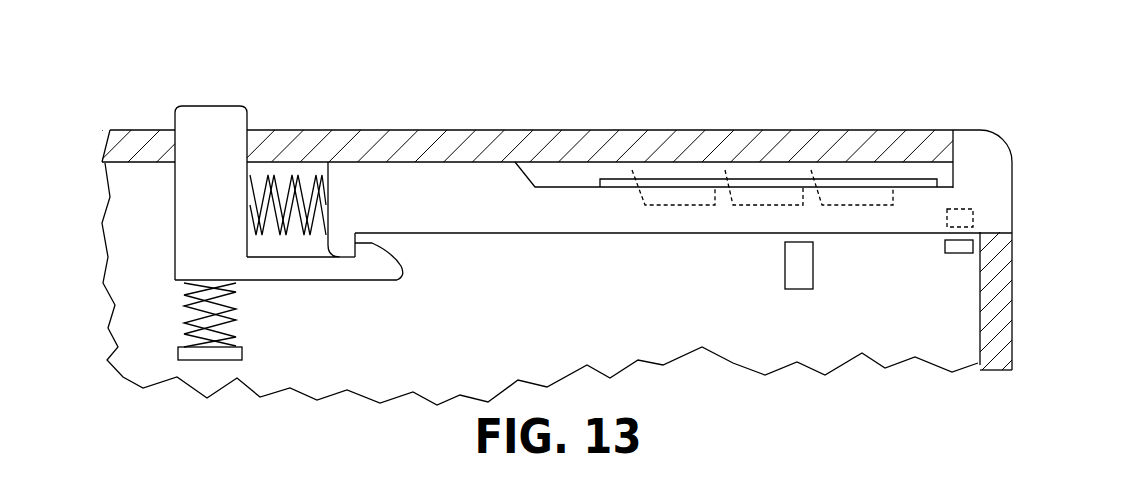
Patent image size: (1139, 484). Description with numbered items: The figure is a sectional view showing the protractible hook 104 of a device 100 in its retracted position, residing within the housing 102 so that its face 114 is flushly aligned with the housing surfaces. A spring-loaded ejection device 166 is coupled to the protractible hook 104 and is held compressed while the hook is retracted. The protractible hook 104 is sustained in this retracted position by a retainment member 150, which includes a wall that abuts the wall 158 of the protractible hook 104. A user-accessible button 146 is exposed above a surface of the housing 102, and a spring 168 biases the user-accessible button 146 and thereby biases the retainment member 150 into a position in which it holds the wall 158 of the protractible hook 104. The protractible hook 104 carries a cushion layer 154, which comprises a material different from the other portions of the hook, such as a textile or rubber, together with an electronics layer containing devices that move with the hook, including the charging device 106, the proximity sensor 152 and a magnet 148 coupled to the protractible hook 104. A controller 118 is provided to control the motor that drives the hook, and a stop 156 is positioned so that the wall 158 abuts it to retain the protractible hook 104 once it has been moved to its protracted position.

The electronic device 100 is at (779, 84).
The housing 102 is at (452, 130).
The protractible hook 104 is at (1033, 148).
The charging device 106 is at (725, 170).
The face 114 is at (1013, 186).
The controller 118 is at (960, 255).
The user-accessible button 146 is at (213, 105).
The magnet 148 is at (632, 170).
The retainment member 150 is at (297, 282).
The proximity sensor 152 is at (973, 216).
The cushion layer 154 is at (864, 179).
The stop 156 is at (798, 290).
The wall 158 is at (360, 258).
The spring-loaded ejection device 166 is at (291, 168).
The spring 168 is at (200, 300).